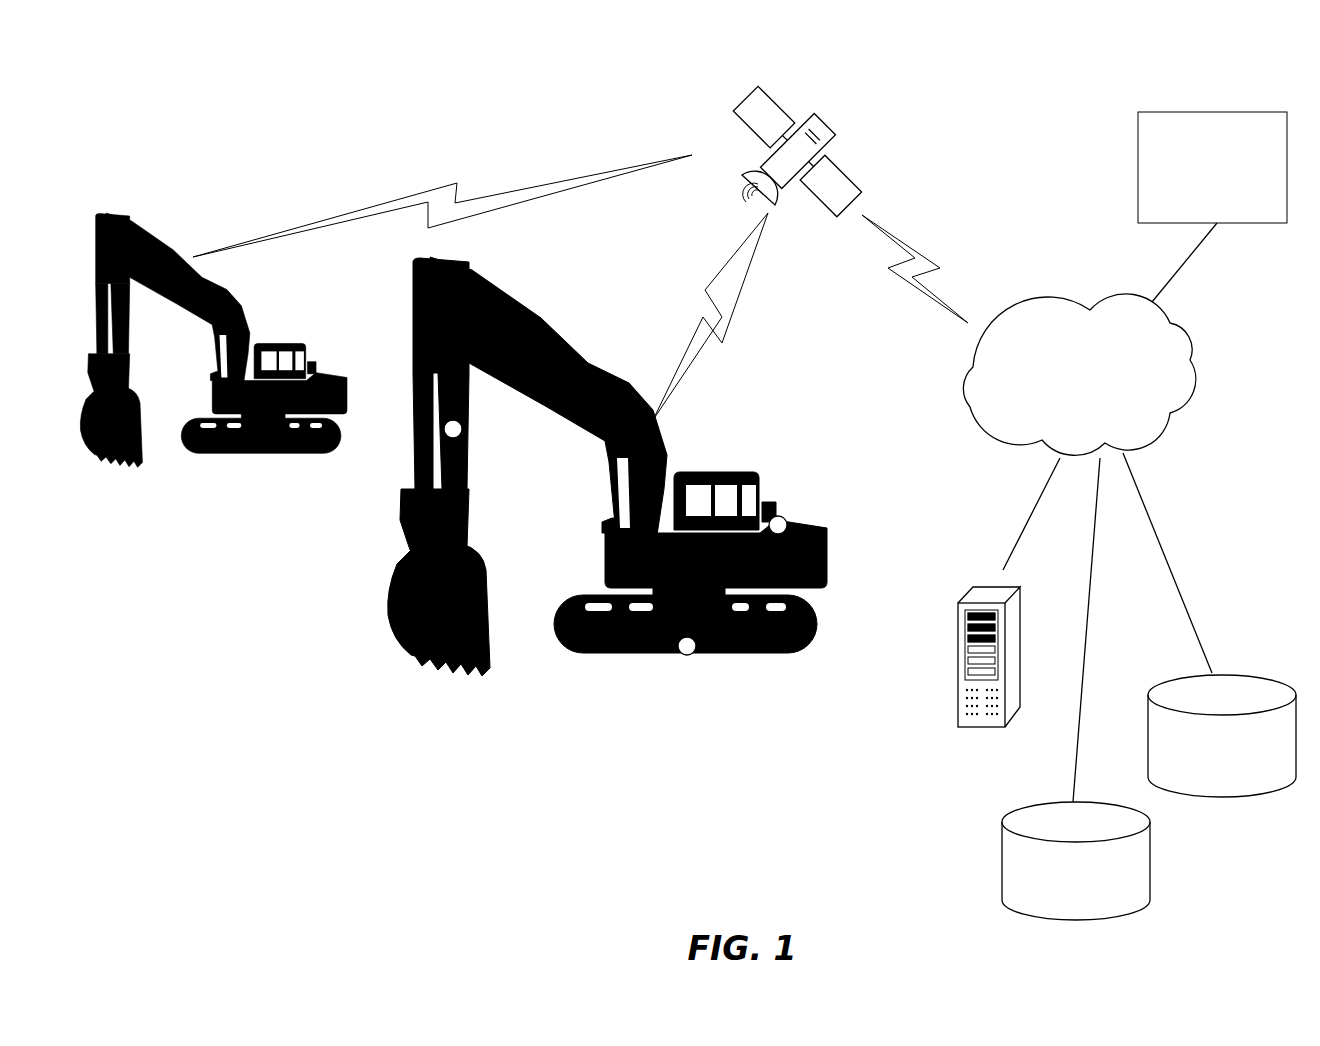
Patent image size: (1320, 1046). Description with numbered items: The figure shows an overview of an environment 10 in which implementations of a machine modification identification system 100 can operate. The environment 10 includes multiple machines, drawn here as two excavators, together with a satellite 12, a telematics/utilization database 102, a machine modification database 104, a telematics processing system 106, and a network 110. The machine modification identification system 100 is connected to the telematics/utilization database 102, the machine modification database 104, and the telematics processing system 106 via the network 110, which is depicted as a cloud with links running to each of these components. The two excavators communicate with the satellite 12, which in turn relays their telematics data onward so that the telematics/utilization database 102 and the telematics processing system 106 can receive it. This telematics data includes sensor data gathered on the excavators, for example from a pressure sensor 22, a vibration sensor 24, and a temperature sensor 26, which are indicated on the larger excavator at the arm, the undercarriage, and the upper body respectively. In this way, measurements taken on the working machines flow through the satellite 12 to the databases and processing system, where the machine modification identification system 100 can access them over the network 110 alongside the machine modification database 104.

The environment 10 is at (394, 98).
The satellite 12 is at (822, 128).
The pressure sensor 22 is at (462, 429).
The vibration sensor 24 is at (689, 656).
The temperature sensor 26 is at (782, 516).
The machine modification identification system 100 is at (1150, 112).
The telematics/utilization database 102 is at (1000, 855).
The machine modification database 104 is at (1220, 792).
The telematics processing system 106 is at (965, 728).
The network 110 is at (1177, 412).